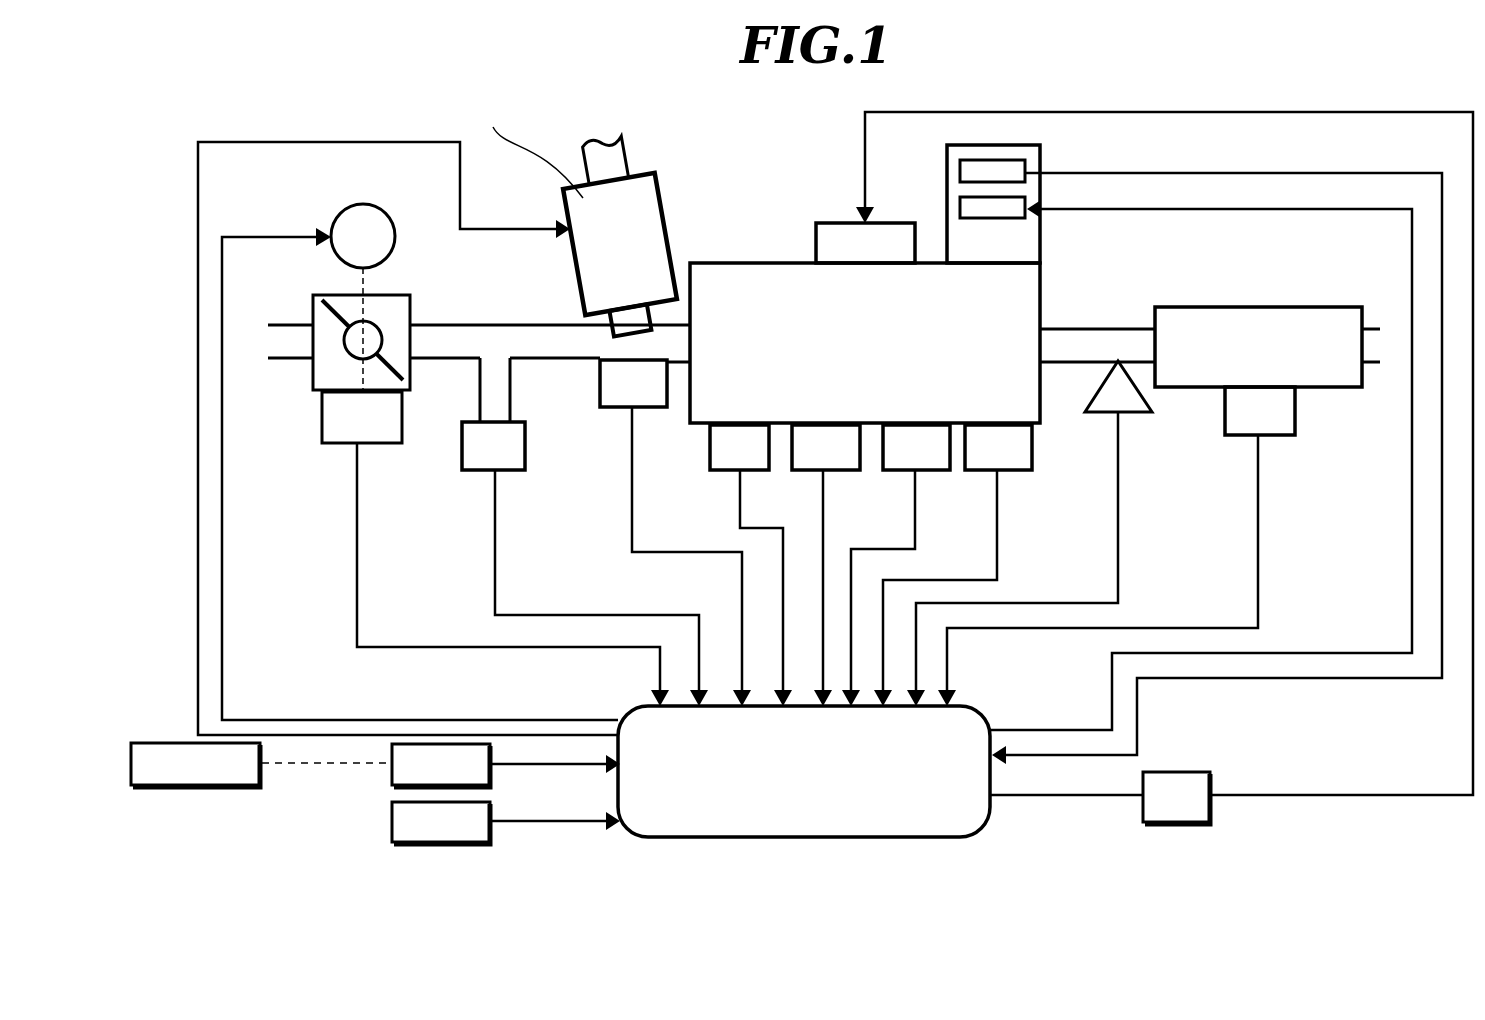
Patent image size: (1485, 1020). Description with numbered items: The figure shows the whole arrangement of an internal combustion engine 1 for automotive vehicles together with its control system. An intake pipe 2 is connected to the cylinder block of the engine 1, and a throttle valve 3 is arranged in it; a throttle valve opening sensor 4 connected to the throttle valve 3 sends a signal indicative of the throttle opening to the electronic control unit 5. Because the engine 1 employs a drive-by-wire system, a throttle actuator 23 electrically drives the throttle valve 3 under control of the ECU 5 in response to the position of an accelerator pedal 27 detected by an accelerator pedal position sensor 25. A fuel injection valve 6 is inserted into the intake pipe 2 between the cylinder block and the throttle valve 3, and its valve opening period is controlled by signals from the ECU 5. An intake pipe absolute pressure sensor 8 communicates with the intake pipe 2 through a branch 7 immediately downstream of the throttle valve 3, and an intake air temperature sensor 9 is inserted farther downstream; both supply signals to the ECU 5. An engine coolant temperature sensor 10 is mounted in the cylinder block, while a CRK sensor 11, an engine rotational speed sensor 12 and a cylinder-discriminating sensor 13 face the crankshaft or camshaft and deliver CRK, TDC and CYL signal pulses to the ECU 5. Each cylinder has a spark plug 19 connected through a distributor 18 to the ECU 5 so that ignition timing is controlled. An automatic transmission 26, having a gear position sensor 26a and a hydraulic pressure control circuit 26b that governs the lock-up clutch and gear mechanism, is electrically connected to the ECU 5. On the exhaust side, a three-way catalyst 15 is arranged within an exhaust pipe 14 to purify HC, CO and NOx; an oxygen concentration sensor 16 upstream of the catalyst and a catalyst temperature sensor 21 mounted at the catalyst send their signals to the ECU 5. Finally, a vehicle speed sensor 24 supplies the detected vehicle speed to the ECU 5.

The internal combustion engine 1 is at (758, 262).
The intake pipe 2 is at (508, 325).
The throttle valve 3 is at (313, 378).
The throttle valve opening sensor 4 is at (402, 425).
The electronic control unit 5 is at (977, 707).
The fuel injection valve 6 is at (665, 210).
The pipe branch to pressure sensor 7 is at (510, 385).
The intake pipe absolute pressure sensor 8 is at (525, 442).
The intake air temperature sensor 9 is at (645, 408).
The engine coolant temperature sensor 10 is at (743, 472).
The CRK sensor 11 is at (830, 472).
The engine rotational speed sensor 12 is at (917, 472).
The cylinder-discriminating sensor 13 is at (1000, 472).
The exhaust pipe 14 is at (1057, 367).
The three-way catalyst 15 is at (1243, 307).
The oxygen concentration sensor 16 is at (1140, 413).
The distributor 18 is at (1175, 772).
The spark plug 19 is at (895, 222).
The catalyst temperature sensor 21 is at (1270, 437).
The throttle actuator 23 is at (342, 212).
The vehicle speed sensor 24 is at (390, 815).
The accelerator pedal position sensor 25 is at (390, 778).
The automatic transmission 26 is at (1042, 240).
The gear position sensor 26a is at (1028, 162).
The hydraulic pressure control circuit 26b is at (1027, 213).
The accelerator pedal 27 is at (190, 787).